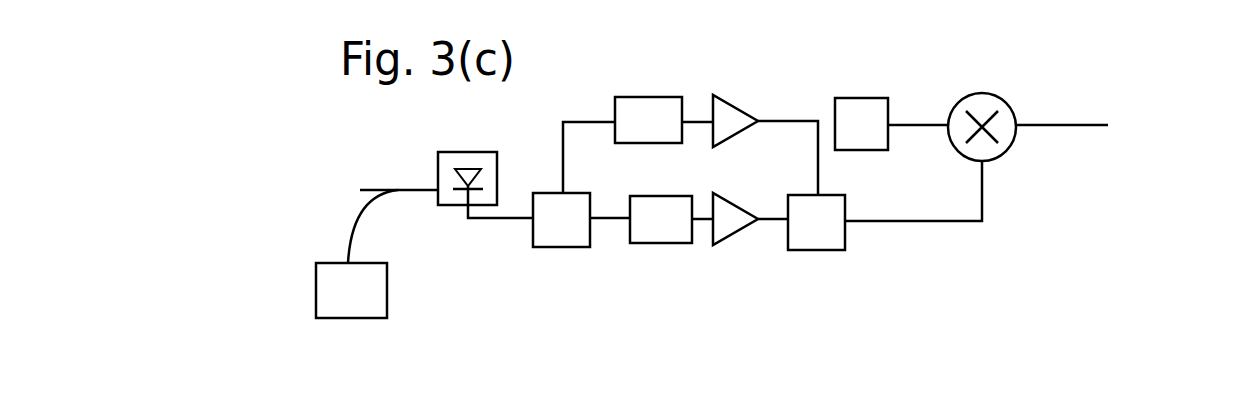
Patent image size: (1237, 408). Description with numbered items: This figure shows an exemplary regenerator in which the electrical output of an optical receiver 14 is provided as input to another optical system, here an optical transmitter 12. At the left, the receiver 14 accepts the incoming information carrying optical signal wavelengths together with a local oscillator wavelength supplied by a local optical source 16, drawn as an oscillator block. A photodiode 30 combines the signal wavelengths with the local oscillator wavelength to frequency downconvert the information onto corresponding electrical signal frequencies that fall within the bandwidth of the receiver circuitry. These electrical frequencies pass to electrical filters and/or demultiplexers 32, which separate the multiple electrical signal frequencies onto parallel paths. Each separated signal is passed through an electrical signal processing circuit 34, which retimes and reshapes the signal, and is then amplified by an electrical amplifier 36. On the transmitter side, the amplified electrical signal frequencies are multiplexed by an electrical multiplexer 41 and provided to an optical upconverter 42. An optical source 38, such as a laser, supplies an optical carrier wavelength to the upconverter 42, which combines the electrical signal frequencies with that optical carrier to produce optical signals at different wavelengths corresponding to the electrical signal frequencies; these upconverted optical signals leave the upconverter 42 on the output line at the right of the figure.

The optical transmitter 12 is at (1008, 259).
The optical receiver 14 is at (327, 166).
The local optical source 16 is at (351, 318).
The photodiode 30 is at (440, 205).
The electrical filters and/or demultiplexers 32 is at (565, 247).
The electrical signal processing circuits 34 is at (645, 143).
The electrical amplifier 36 is at (723, 143).
The optical source 38 is at (877, 98).
The electrical multiplexer 41 is at (815, 250).
The optical upconverter 42 is at (982, 93).